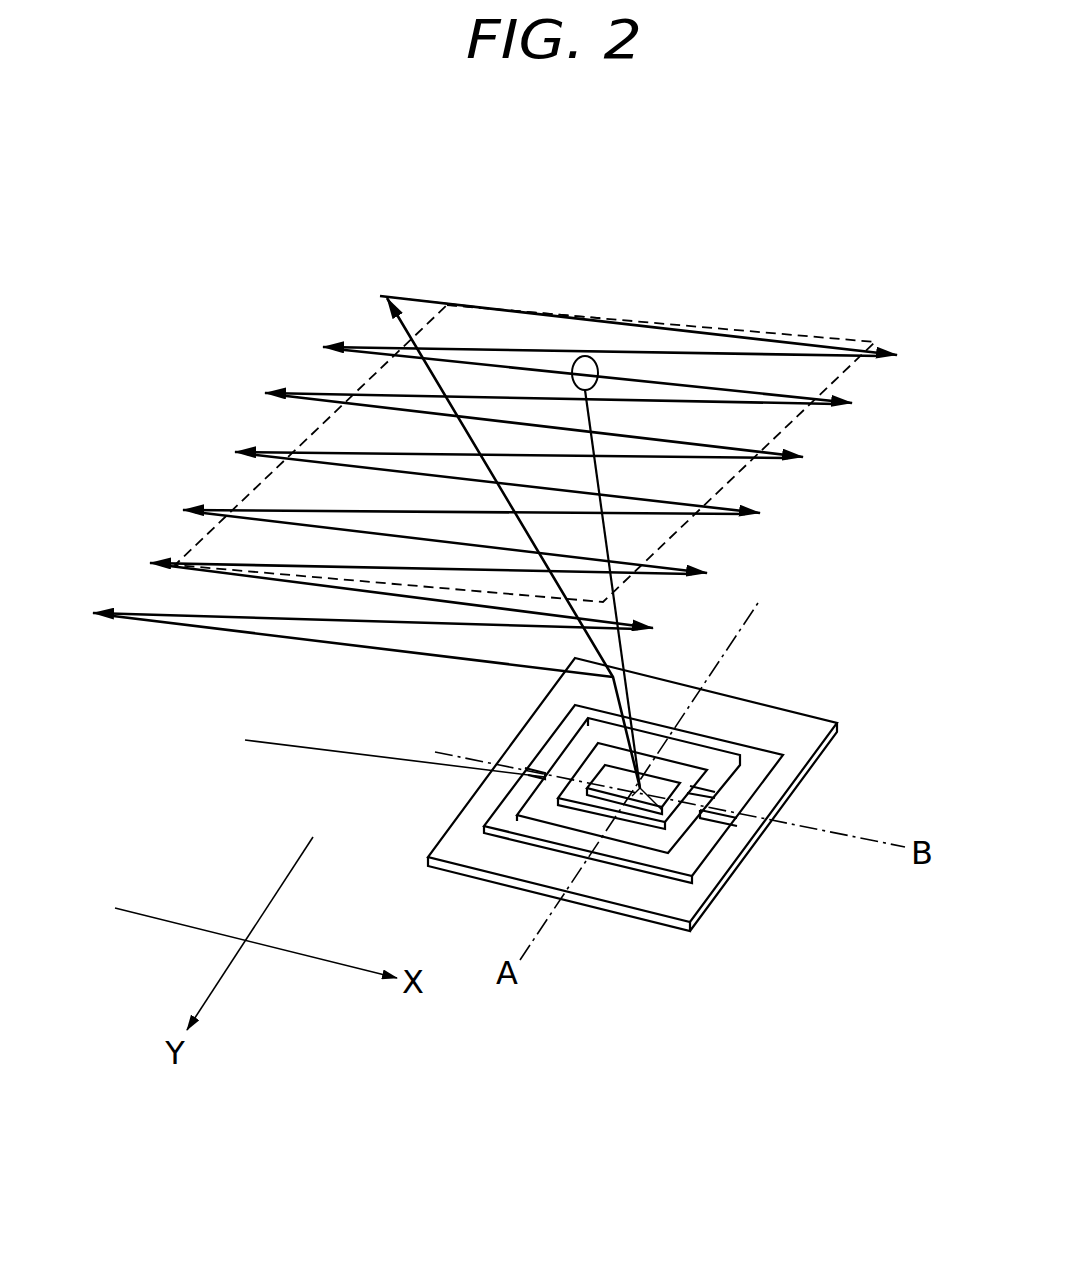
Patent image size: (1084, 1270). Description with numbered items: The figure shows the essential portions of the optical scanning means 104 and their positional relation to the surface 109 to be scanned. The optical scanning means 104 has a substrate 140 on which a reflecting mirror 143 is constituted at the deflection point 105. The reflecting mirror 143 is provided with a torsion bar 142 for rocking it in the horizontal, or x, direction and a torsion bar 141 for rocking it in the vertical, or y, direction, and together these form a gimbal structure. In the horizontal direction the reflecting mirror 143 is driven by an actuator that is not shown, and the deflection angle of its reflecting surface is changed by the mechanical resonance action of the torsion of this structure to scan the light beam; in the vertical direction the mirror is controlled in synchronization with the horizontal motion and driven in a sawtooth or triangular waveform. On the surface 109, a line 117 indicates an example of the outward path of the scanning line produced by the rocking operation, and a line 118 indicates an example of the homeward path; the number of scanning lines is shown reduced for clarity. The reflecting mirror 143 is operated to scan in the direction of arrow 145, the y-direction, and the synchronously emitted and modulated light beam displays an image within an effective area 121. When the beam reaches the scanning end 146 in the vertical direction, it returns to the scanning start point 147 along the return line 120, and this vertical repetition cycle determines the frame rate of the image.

The optical scanning means 104 is at (655, 977).
The deflection point 105 is at (668, 812).
The surface to be scanned 109 is at (453, 275).
The line (outward path of scanning line) 117 is at (422, 300).
The line (homeward path of scanning line) 118 is at (440, 338).
The return line 120 is at (527, 318).
The effective area 121 is at (616, 320).
The substrate 140 is at (793, 725).
The torsion bar 141 is at (715, 822).
The torsion bar 142 is at (690, 760).
The reflecting mirror 143 is at (737, 815).
The arrow 145 is at (802, 603).
The scanning end 146 is at (600, 680).
The scanning start point 147 is at (386, 298).